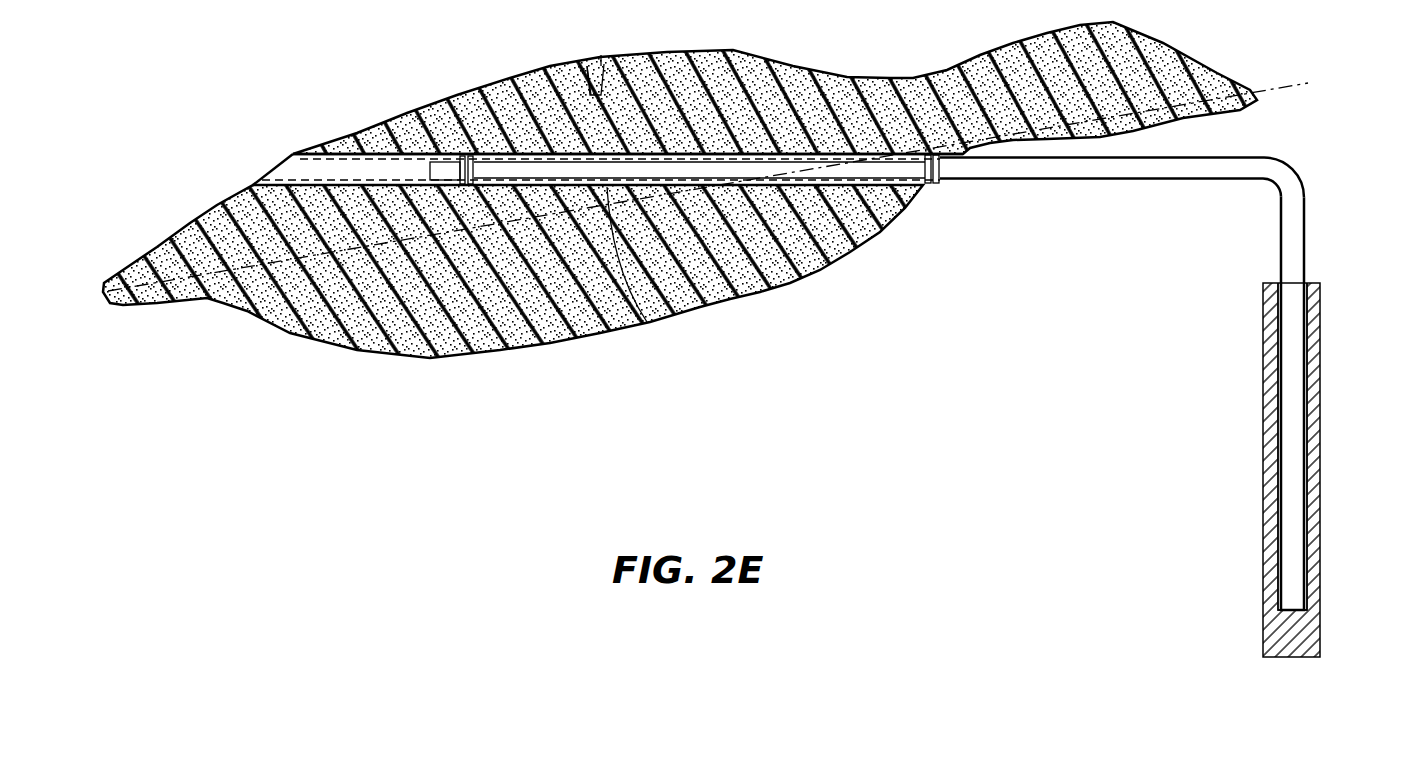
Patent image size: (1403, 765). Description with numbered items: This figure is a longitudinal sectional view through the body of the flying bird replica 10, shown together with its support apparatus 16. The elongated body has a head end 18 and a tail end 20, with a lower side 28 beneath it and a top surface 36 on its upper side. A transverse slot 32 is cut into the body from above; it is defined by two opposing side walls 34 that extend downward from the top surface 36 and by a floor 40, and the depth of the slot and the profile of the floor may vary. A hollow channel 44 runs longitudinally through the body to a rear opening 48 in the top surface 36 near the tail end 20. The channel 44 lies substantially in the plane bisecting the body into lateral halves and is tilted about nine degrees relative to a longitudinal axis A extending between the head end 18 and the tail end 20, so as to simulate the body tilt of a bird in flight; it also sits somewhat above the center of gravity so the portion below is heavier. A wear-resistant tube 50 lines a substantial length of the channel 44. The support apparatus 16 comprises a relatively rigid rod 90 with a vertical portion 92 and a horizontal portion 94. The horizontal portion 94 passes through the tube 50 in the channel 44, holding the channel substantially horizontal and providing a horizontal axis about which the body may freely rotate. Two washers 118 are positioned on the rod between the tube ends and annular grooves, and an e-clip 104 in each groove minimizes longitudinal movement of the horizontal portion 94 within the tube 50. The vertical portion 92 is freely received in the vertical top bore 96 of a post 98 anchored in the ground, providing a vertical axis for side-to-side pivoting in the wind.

The flying bird replica 10 is at (890, 33).
The support apparatus 16 is at (1169, 386).
The head end 18 is at (1245, 50).
The tail end 20 is at (165, 220).
The lower side 28 is at (543, 350).
The transverse slot 32 is at (592, 66).
The side walls 34 is at (601, 63).
The top surface 36 is at (702, 52).
The floor 40 is at (589, 72).
The hollow channel 44 is at (368, 140).
The rear opening 48 is at (311, 148).
The wear-resistant tube 50 is at (652, 322).
The rod 90 is at (1213, 219).
The vertical portion 92 is at (1303, 225).
The horizontal portion 94 is at (1037, 181).
The vertical top bore 96 is at (1300, 405).
The post 98 is at (1265, 427).
The e-clip 104 is at (433, 150).
The washers 118 is at (470, 150).
The longitudinal axis A is at (1312, 86).